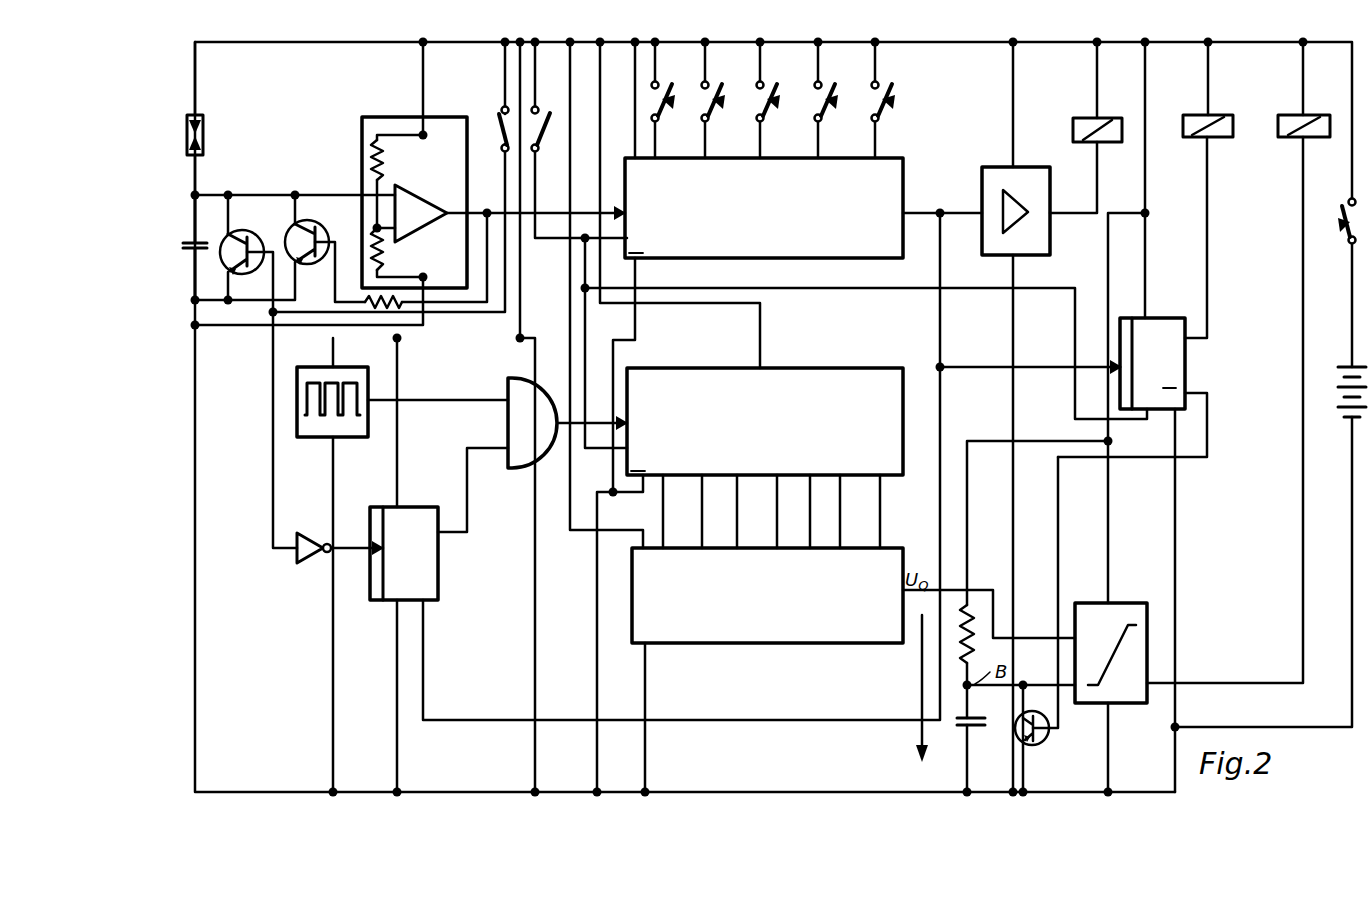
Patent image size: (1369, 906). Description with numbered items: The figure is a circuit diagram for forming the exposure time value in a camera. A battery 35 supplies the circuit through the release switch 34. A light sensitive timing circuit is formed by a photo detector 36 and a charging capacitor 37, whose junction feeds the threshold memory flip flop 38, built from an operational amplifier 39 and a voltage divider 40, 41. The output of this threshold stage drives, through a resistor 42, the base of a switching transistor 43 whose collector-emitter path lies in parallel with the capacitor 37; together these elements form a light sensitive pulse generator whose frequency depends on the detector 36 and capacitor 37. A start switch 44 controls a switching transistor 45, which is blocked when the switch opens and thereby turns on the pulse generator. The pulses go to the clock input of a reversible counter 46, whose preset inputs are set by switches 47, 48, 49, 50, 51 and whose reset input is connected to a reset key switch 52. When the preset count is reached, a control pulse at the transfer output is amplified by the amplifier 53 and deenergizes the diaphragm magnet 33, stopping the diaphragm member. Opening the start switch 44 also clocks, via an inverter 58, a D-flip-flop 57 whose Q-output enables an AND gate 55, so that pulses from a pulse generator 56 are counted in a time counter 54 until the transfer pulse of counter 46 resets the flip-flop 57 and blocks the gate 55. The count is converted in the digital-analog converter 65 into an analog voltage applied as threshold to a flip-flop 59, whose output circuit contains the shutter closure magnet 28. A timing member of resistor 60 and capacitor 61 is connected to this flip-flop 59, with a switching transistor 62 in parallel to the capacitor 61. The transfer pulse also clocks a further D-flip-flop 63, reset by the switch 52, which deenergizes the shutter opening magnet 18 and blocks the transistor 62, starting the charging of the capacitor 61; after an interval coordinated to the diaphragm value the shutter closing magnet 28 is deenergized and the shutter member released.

The shutter opening magnet 18 is at (1212, 115).
The shutter closure magnet 28 is at (1307, 115).
The diaphragm magnet 33 is at (1088, 125).
The release switch 34 is at (1343, 245).
The battery 35 is at (1346, 418).
The photo detector 36 is at (200, 130).
The charging capacitor 37 is at (208, 240).
The threshold memory flip flop 38 is at (385, 117).
The operational amplifier 39 is at (430, 204).
The voltage divider resistor 40 is at (391, 160).
The voltage divider resistor 41 is at (392, 251).
The resistor 42 is at (408, 302).
The switching transistor 43 is at (310, 220).
The start switch 44 is at (496, 150).
The switching transistor 45 is at (245, 230).
The reversible counter 46 is at (903, 232).
The switch 47 is at (660, 100).
The switch 48 is at (712, 100).
The switch 49 is at (766, 100).
The switch 50 is at (825, 100).
The switch 51 is at (885, 100).
The reset key switch 52 is at (540, 108).
The amplifier 53 is at (1030, 175).
The time counter 54 is at (858, 368).
The AND gate 55 is at (512, 468).
The pulse generator 56 is at (310, 372).
The D-flip-flop 57 is at (416, 522).
The inverter 58 is at (308, 531).
The flip-flop 59 is at (1135, 603).
The resistor 60 is at (968, 612).
The capacitor 61 is at (960, 726).
The switching transistor 62 is at (1042, 740).
The D-flip-flop 63 is at (1130, 318).
The digital-analog converter 65 is at (760, 643).